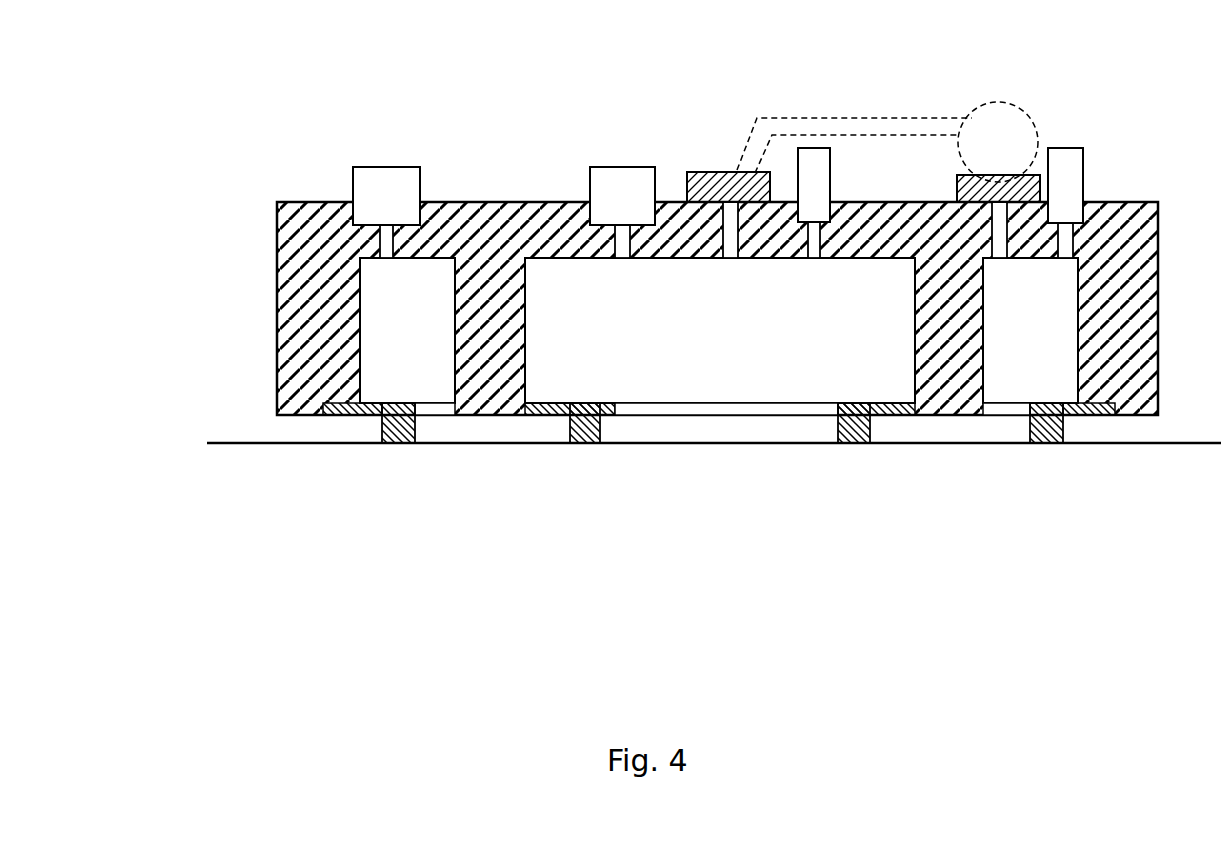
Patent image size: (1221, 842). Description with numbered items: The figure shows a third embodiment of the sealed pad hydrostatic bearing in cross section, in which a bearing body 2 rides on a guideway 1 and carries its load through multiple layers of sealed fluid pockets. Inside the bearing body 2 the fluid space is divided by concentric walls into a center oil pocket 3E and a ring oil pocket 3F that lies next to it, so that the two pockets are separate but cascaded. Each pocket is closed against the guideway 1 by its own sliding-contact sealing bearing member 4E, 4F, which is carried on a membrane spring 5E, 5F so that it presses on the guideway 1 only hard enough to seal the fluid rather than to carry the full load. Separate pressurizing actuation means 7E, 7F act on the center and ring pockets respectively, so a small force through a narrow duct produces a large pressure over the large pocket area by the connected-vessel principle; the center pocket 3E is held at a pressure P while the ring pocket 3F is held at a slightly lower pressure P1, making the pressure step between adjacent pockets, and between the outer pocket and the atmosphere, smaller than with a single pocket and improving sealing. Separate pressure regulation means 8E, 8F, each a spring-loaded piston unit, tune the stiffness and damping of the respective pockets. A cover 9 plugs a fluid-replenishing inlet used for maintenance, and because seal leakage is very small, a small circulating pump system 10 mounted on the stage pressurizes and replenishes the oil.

The guideway 1 is at (228, 438).
The bearing body 2 is at (257, 295).
The center oil pocket 3E is at (565, 360).
The ring oil pocket 3F is at (423, 370).
The sealing bearing member 4E is at (838, 432).
The sealing bearing member 4F is at (378, 428).
The membrane spring 5E is at (553, 415).
The membrane spring 5F is at (367, 416).
The pressurizing actuation means 7E is at (620, 160).
The pressurizing actuation means 7F is at (362, 160).
The pressure regulation means 8E is at (823, 147).
The pressure regulation means 8F is at (1083, 177).
The cover 9 is at (708, 173).
The circulating pump system 10 is at (973, 103).